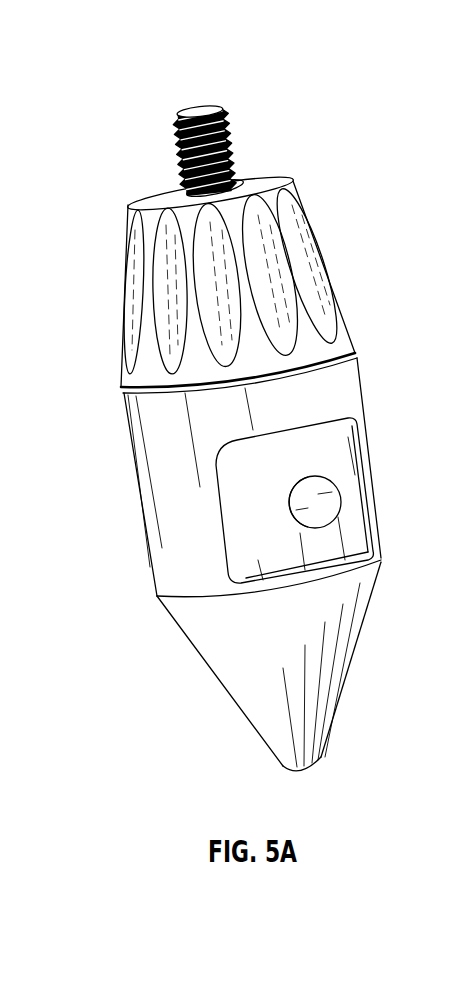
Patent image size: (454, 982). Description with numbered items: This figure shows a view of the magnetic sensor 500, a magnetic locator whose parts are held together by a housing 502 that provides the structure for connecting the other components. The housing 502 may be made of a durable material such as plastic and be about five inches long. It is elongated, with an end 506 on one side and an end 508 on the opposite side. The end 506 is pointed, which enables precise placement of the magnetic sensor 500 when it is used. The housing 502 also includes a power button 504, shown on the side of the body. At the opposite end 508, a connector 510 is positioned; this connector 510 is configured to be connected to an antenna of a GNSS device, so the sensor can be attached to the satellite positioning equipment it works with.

The magnetic sensor 500 is at (84, 128).
The housing 502 is at (140, 493).
The power button 504 is at (290, 507).
The end 506 is at (288, 770).
The end 508 is at (141, 205).
The connector 510 is at (187, 108).